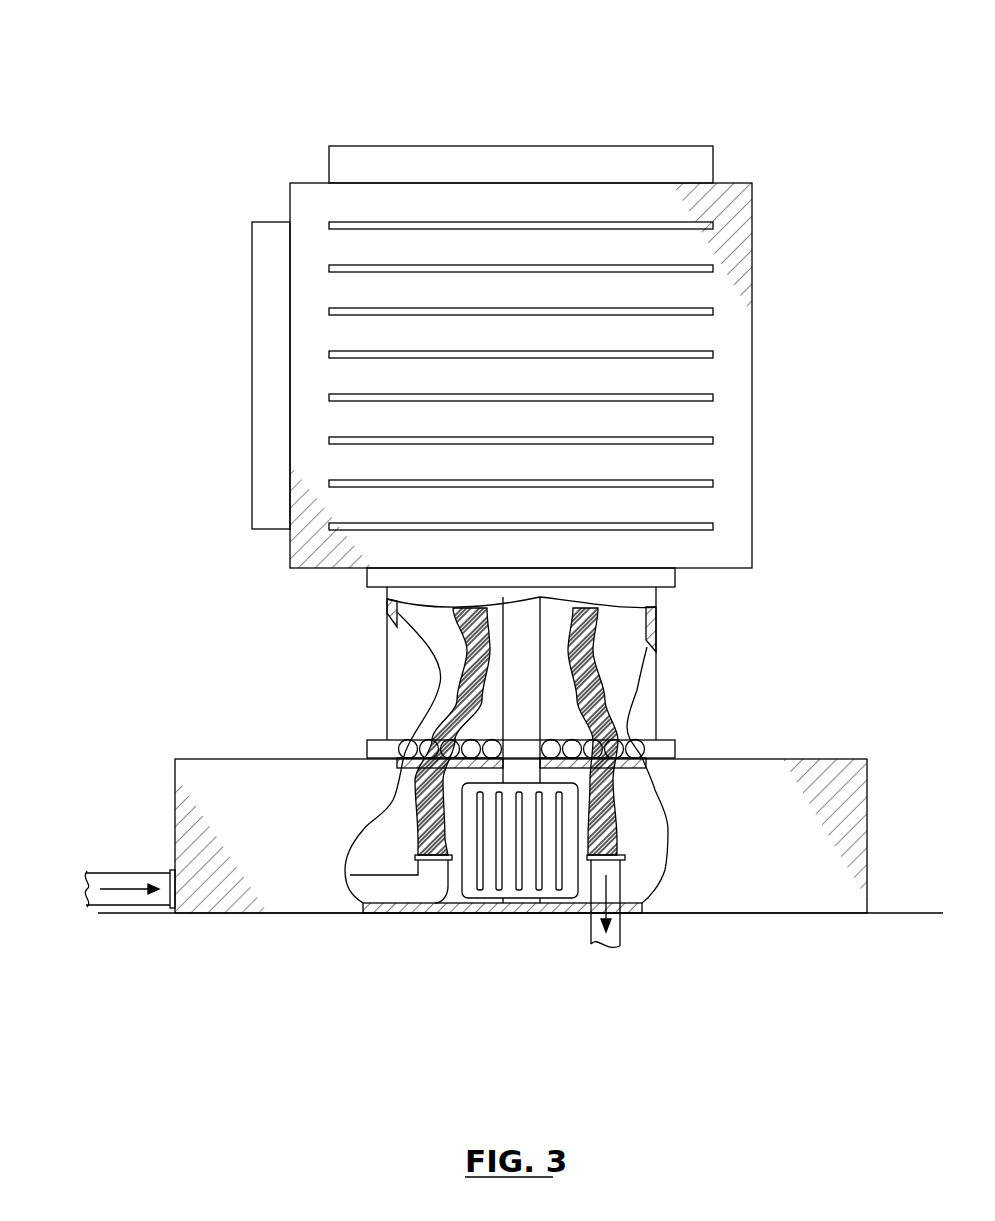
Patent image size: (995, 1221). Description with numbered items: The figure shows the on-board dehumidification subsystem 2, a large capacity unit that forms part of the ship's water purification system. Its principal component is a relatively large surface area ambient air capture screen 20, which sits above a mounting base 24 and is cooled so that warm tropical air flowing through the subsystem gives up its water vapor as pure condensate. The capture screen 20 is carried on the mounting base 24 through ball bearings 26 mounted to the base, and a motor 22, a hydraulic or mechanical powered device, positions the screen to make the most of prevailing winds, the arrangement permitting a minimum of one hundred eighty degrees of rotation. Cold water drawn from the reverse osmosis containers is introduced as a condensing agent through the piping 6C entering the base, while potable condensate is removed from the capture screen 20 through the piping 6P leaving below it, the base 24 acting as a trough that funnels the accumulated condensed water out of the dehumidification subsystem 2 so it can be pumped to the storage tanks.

The dehumidification subsystem 2 is at (590, 80).
The ambient air capture screen 20 is at (728, 425).
The motor 22 is at (465, 783).
The mounting base 24 is at (731, 772).
The ball bearings 26 is at (590, 772).
The piping 6C is at (168, 873).
The piping 6P is at (592, 925).